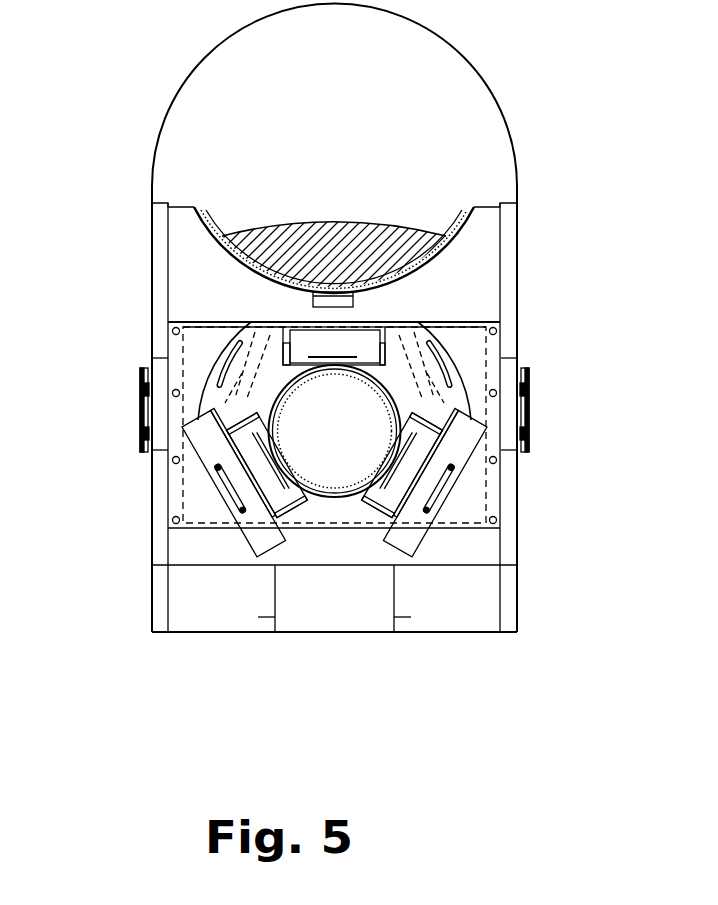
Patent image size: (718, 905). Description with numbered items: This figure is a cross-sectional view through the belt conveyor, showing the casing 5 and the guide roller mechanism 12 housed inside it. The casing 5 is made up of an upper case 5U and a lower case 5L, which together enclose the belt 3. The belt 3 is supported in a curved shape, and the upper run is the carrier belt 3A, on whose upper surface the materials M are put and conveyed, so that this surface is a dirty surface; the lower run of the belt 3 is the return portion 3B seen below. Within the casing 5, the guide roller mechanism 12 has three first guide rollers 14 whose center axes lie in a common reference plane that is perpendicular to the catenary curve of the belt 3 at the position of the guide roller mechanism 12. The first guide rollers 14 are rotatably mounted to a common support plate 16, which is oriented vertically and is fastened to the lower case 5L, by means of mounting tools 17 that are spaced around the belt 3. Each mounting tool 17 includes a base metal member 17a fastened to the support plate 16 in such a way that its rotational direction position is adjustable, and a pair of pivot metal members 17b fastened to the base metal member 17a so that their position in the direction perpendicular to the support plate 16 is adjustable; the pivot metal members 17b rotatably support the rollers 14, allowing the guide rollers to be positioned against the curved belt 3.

The belt 3 is at (321, 288).
The carrier belt 3A is at (257, 230).
The crucible lower part (ring) 3B is at (287, 457).
The materials M is at (337, 230).
The casing 5 is at (278, 318).
The upper case 5U is at (150, 265).
The lower case 5L is at (150, 503).
The guide roller mechanism 12 is at (463, 350).
The first guide rollers 14 is at (363, 345).
The support plate 16 is at (460, 377).
The mounting tools 17 is at (442, 523).
The base metal member 17a is at (247, 528).
The pivot metal members 17b is at (288, 512).